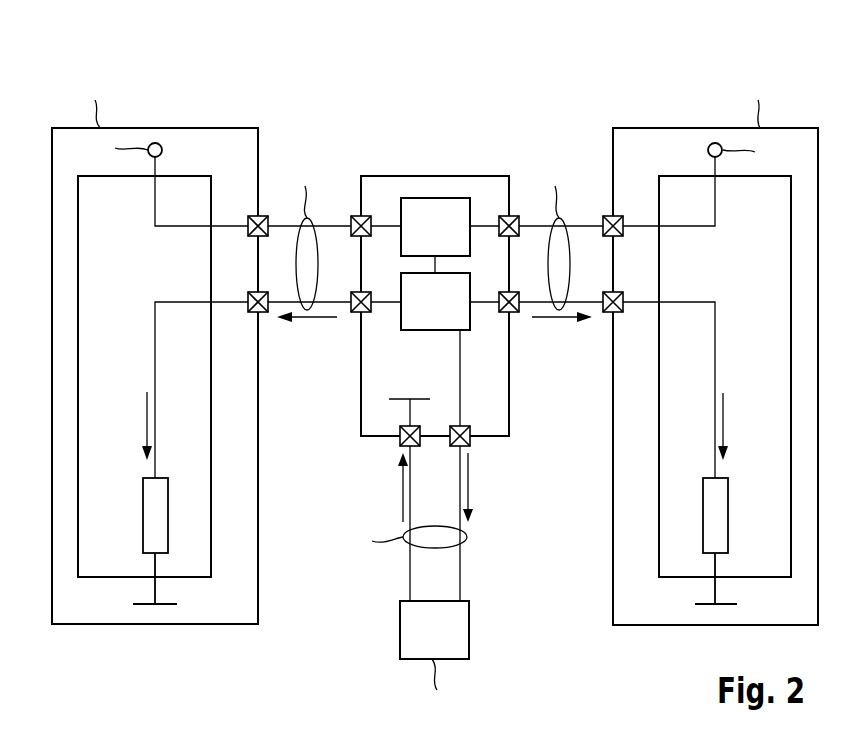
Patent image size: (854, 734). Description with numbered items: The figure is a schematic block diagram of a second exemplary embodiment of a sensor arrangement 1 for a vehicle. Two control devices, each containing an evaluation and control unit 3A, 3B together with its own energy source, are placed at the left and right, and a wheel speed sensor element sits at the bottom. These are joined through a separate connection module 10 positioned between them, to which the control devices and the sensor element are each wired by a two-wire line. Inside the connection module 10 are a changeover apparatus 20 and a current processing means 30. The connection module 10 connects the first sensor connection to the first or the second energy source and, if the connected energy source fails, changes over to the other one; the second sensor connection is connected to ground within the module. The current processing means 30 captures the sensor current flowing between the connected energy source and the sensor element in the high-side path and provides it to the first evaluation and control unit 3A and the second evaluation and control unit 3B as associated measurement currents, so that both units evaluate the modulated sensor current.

The sensor arrangement 1 is at (247, 70).
The first evaluation and control unit 3A is at (683, 176).
The second evaluation and control unit 3B is at (191, 176).
The connection module 10 is at (390, 176).
The changeover apparatus 20 is at (440, 198).
The current processing means 30 is at (430, 330).